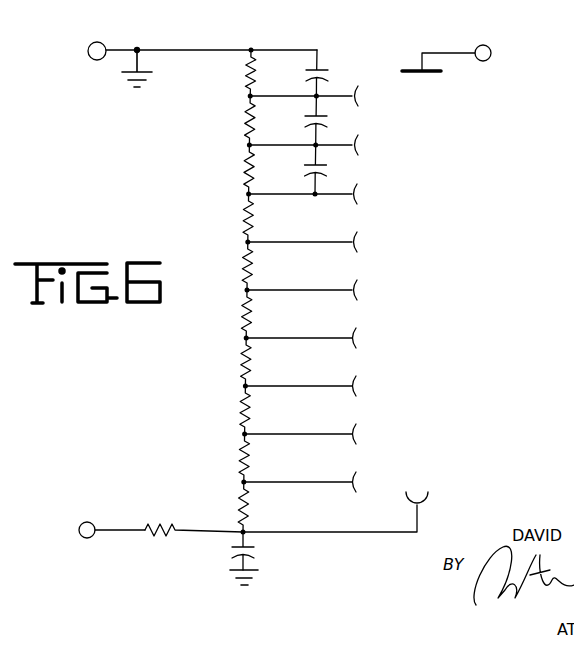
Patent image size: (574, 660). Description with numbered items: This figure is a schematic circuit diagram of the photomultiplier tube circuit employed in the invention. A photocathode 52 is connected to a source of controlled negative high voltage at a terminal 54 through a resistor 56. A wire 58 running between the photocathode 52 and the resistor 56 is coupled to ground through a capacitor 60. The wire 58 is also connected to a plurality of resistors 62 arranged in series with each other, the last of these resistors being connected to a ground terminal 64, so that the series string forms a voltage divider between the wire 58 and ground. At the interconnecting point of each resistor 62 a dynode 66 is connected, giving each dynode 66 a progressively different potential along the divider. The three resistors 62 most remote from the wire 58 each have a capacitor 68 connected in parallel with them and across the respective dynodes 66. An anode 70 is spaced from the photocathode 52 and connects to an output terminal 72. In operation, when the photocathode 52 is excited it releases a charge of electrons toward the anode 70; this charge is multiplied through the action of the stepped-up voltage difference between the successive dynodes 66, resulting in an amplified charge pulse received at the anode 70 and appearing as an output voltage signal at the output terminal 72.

The photocathode 52 is at (428, 492).
The terminal 54 is at (85, 539).
The resistor 56 is at (167, 533).
The wire 58 is at (338, 533).
The capacitor 60 is at (250, 555).
The resistors 62 is at (242, 410).
The ground terminal 64 is at (90, 43).
The dynode 66 is at (360, 398).
The capacitor 68 is at (305, 69).
The anode 70 is at (428, 73).
The output terminal 72 is at (490, 59).